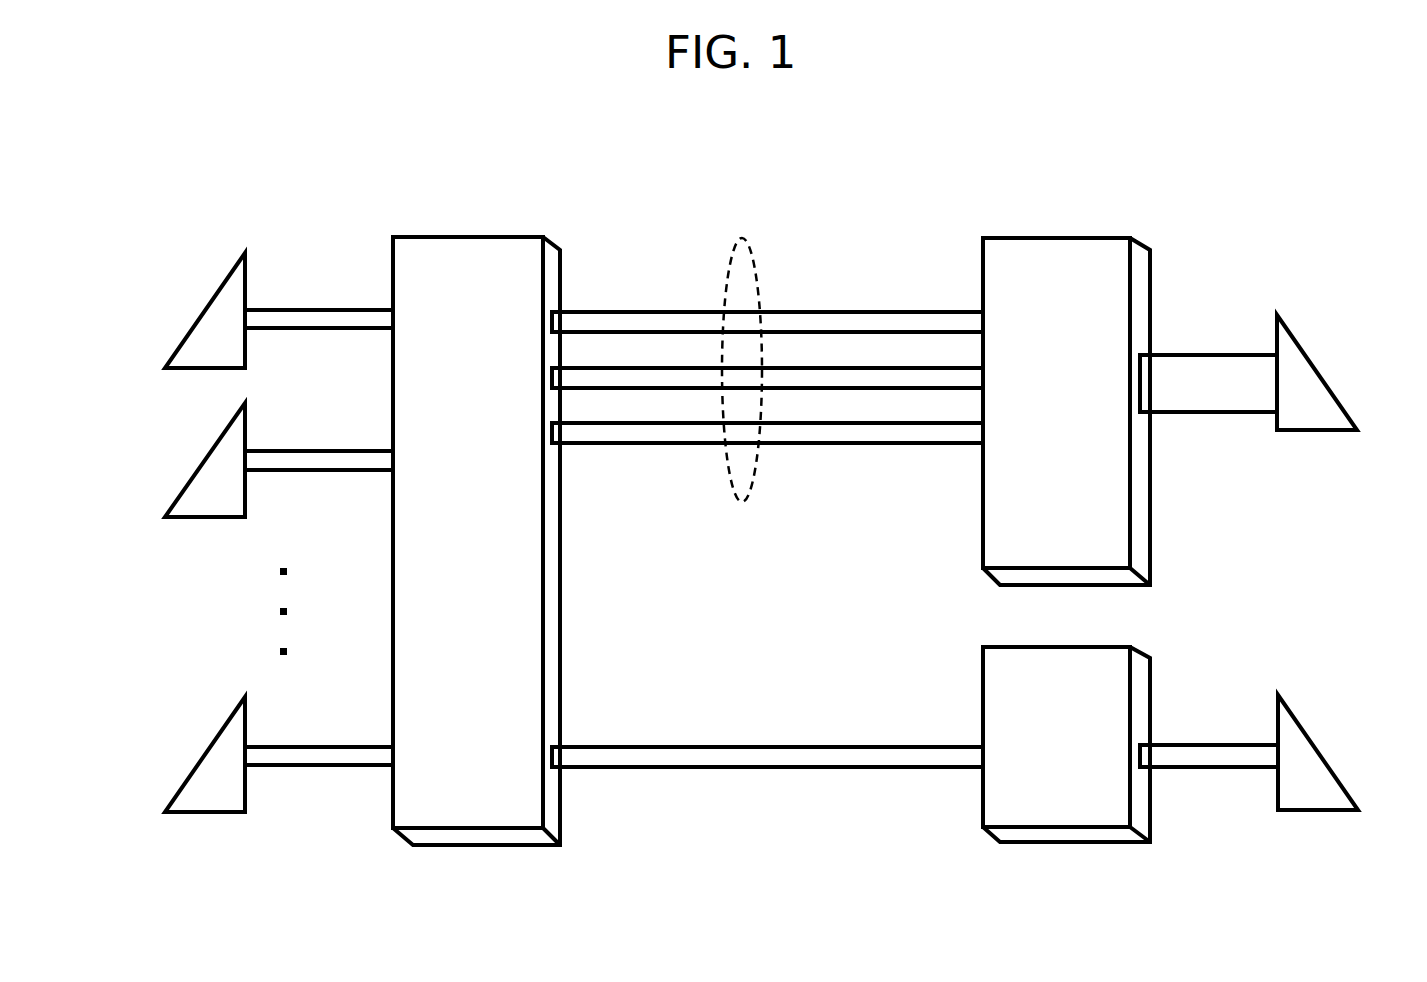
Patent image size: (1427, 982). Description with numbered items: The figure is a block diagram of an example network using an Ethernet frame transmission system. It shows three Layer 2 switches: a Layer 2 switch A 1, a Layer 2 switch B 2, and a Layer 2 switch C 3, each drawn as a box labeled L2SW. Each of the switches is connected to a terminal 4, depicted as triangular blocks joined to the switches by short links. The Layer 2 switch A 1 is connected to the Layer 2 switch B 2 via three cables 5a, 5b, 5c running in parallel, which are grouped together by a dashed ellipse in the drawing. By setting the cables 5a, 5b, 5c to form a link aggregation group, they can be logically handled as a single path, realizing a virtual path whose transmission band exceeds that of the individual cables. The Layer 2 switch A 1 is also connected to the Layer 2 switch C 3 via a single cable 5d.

The Layer 2 switch A 1 is at (545, 237).
The Layer 2 switch B 2 is at (1132, 238).
The Layer 2 switch C 3 is at (1133, 647).
The terminal 4 is at (195, 458).
The cable 5a is at (833, 312).
The cable 5b is at (833, 368).
The cable 5c is at (833, 423).
The cable 5d is at (836, 748).